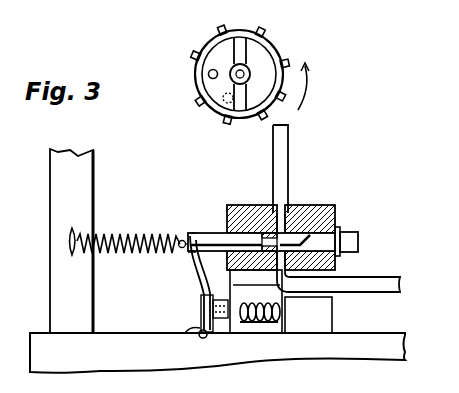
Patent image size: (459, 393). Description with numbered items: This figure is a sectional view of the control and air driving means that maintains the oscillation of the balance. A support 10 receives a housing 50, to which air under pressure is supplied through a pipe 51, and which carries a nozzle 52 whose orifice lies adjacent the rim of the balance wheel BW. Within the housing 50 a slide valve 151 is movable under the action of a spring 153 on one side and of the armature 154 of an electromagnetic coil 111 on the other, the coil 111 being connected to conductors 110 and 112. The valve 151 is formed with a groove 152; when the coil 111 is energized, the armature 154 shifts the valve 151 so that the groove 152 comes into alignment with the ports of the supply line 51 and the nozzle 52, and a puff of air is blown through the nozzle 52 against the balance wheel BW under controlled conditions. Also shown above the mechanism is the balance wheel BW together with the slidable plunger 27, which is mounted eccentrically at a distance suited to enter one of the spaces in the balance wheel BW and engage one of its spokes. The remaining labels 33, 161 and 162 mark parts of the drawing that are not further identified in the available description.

The base plate 10 is at (217, 261).
The ratchet wheel 27 is at (210, 77).
The direction of rotation arrow BW is at (275, 53).
The frame 33 is at (449, 229).
The bearing block 50 is at (295, 222).
The conduit pipe 51 is at (380, 268).
The vertical shaft 52 is at (289, 158).
The coil 110 is at (241, 290).
The housing block 111 is at (278, 313).
The contact element 112 is at (276, 297).
The horizontal rod 151 is at (338, 213).
The collar 152 is at (268, 234).
The spring 153 is at (140, 205).
The lever 154 is at (203, 302).
The terminal 161 is at (140, 383).
The terminal 162 is at (378, 384).